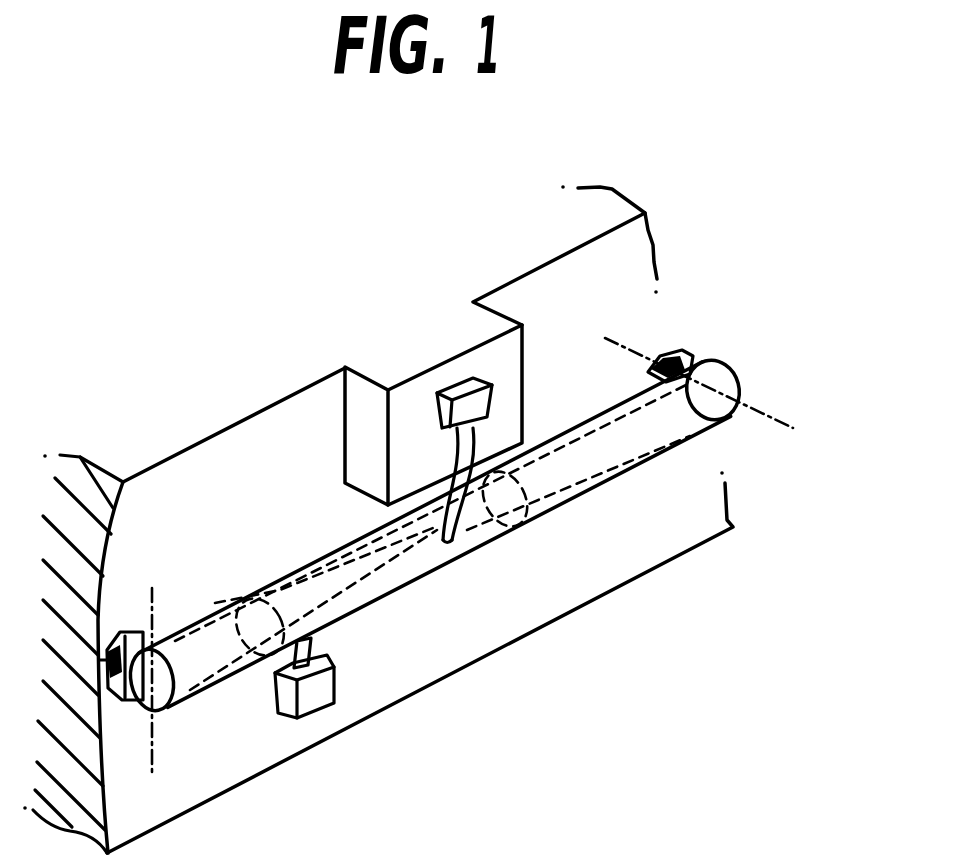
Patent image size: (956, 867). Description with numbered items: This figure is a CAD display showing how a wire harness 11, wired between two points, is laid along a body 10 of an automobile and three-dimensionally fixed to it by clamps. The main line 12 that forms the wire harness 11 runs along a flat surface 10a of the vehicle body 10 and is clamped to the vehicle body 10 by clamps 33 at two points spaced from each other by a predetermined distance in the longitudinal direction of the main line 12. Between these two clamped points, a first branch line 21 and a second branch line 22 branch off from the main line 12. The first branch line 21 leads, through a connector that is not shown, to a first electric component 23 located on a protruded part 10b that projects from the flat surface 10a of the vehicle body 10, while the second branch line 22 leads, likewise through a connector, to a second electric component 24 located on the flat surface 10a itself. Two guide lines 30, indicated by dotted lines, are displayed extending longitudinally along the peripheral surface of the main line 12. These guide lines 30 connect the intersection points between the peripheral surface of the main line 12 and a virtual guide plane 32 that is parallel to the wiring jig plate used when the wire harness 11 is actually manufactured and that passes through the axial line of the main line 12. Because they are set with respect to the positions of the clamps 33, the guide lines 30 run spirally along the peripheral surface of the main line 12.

The body of an automobile 10 is at (272, 457).
The flat surface 10a is at (198, 490).
The protruded part 10b is at (510, 375).
The wire harness 11 is at (703, 449).
The main line 12 is at (597, 503).
The first branch line 21 is at (455, 470).
The second branch line 22 is at (310, 640).
The first electric component 23 is at (472, 403).
The second electric component 24 is at (310, 697).
The guide lines 30 is at (435, 608).
The virtual guide plane 32 is at (155, 600).
The clamps 33 is at (127, 630).